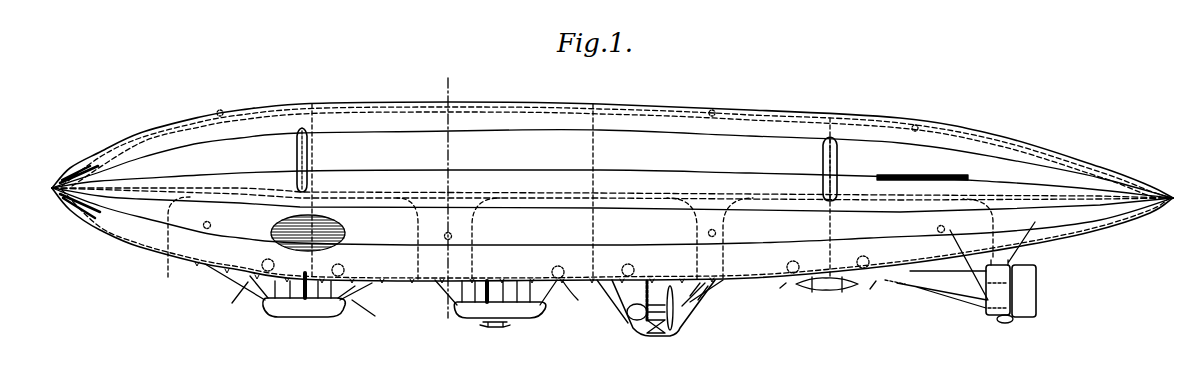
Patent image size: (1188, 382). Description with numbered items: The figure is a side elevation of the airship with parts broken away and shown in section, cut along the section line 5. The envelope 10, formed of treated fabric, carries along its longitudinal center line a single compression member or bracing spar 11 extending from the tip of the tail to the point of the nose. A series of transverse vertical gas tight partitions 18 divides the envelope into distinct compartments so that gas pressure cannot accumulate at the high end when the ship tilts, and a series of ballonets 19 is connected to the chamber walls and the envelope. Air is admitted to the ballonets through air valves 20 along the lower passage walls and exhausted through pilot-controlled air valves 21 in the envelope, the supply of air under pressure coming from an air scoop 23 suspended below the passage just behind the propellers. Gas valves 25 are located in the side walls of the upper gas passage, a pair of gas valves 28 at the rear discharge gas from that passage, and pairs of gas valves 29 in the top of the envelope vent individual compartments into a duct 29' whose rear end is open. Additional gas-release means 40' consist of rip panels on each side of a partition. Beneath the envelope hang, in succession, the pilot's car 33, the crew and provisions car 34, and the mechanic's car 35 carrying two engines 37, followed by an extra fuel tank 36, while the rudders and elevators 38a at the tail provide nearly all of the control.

The section line 5 is at (447, 200).
The envelope 10 is at (646, 106).
The compression member 11 is at (556, 196).
The transverse vertical gas tight partitions 18 is at (845, 220).
The ballonets 19 is at (168, 218).
The air valves 20 is at (263, 260).
The air valves 21 is at (580, 316).
The air scoop 23 is at (702, 294).
The gas valves 25 is at (207, 221).
The gas valves 28 is at (942, 265).
The gas valves 29 is at (473, 100).
The passageway or duct 29' is at (912, 110).
The car 33 is at (305, 319).
The car 34 is at (519, 320).
The car 35 is at (660, 338).
The extra fuel tank 36 is at (828, 289).
The engines 37 is at (633, 325).
The rudders and elevators 38a is at (1036, 292).
The means for releasing the gas 40' is at (564, 164).